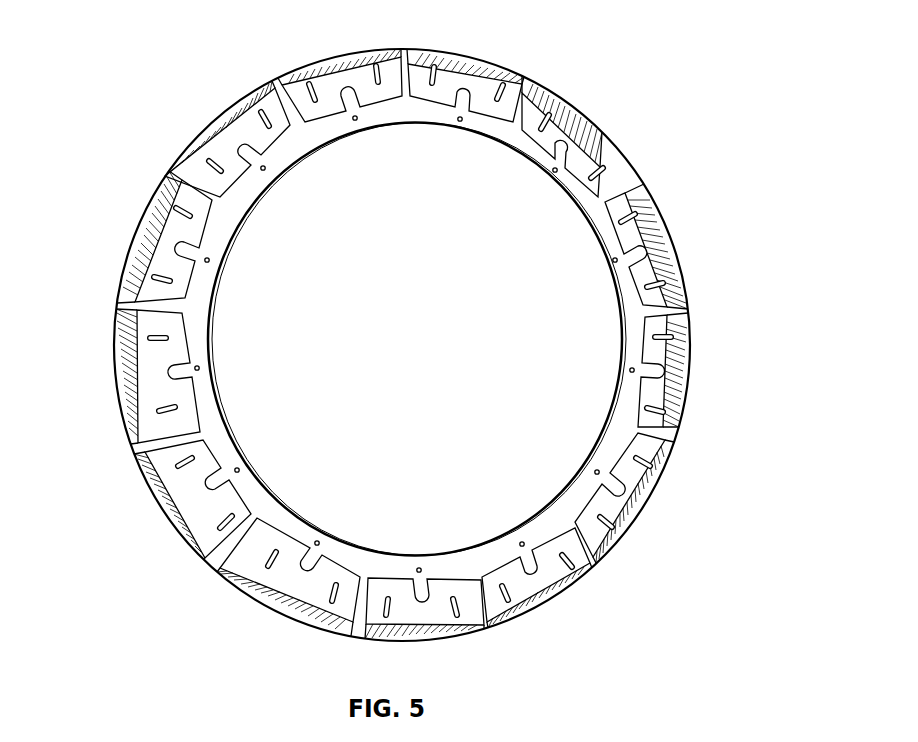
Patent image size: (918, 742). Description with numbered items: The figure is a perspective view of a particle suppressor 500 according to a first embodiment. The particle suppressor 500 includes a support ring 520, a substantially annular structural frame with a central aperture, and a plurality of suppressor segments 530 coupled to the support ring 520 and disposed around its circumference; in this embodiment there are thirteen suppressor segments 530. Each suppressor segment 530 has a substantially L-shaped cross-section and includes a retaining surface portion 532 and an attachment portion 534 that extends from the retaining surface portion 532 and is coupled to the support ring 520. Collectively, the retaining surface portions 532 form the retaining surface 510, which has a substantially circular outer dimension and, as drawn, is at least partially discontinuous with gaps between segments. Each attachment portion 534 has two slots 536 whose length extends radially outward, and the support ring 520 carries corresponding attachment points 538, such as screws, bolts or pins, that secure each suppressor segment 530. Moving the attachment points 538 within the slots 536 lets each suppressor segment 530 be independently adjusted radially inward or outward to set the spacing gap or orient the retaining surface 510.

The particle suppressor 500 is at (127, 50).
The retaining surface 510 is at (670, 257).
The support ring 520 is at (619, 278).
The suppressor segment 530 is at (657, 226).
The retaining surface portion 532 is at (257, 592).
The attachment portion 534 is at (295, 553).
The slot 536 is at (205, 528).
The attachment point 538 is at (188, 462).